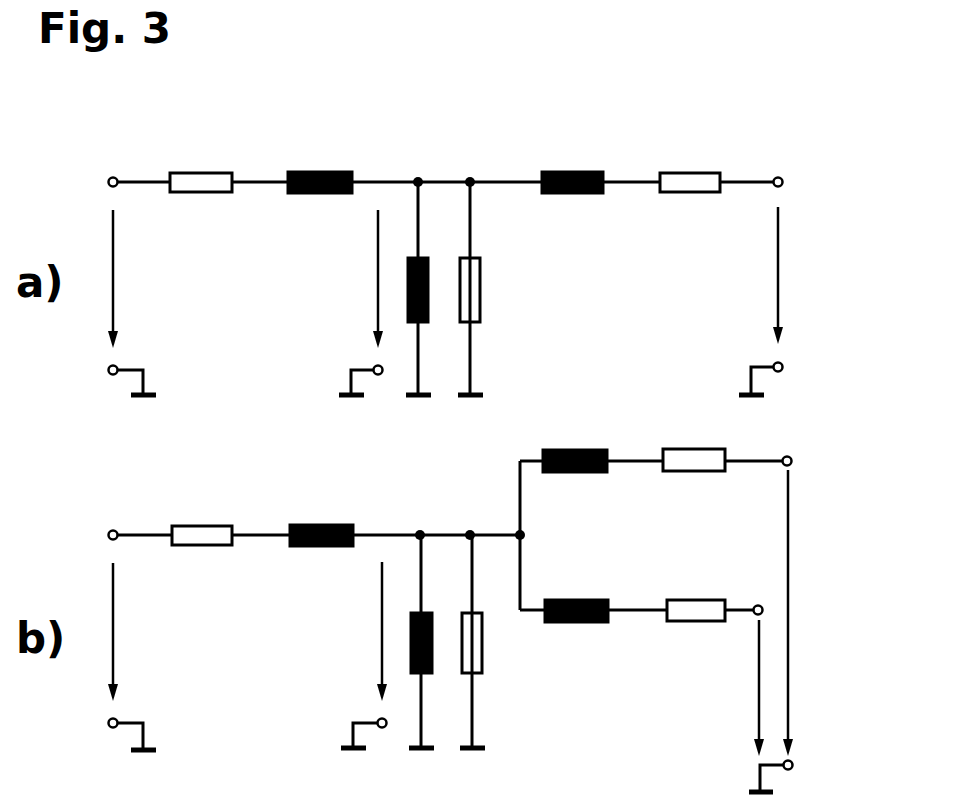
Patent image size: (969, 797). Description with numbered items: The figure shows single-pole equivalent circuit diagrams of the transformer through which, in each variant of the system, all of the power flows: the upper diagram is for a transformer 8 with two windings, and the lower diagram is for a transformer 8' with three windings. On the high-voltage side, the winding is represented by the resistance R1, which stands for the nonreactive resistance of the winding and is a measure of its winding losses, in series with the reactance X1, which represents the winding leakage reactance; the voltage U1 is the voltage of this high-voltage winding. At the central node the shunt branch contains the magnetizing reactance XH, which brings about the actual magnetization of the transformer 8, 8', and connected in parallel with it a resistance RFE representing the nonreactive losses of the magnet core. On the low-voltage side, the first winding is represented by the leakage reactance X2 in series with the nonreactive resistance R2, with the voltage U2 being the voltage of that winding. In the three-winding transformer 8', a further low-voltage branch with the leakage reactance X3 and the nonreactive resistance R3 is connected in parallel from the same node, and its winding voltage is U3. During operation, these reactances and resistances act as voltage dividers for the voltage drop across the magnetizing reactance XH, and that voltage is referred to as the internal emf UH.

The transformer 8 is at (412, 237).
The transformer 8' is at (417, 613).
The resistance R1 is at (201, 197).
The reactance X1 is at (320, 197).
The magnetizing reactance XH is at (407, 288).
The resistance RFE is at (495, 288).
The reactance X2 is at (572, 197).
The resistance R2 is at (690, 197).
The reactance X3 is at (575, 476).
The resistance R3 is at (694, 475).
The voltage U1 is at (131, 279).
The internal emf UH is at (362, 279).
The voltage U2 is at (764, 275).
The voltage U3 is at (772, 613).